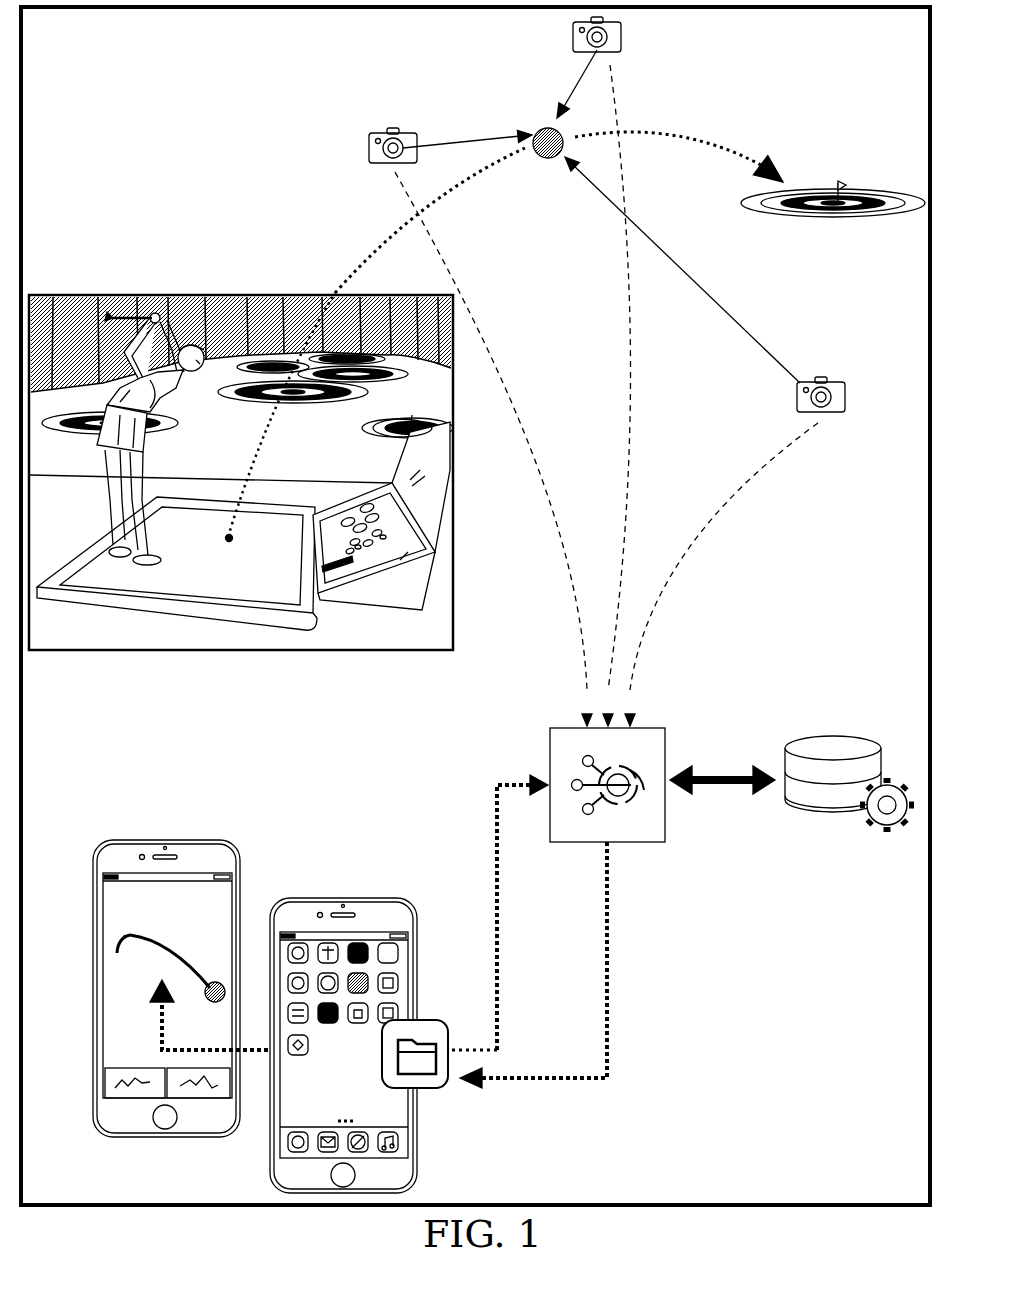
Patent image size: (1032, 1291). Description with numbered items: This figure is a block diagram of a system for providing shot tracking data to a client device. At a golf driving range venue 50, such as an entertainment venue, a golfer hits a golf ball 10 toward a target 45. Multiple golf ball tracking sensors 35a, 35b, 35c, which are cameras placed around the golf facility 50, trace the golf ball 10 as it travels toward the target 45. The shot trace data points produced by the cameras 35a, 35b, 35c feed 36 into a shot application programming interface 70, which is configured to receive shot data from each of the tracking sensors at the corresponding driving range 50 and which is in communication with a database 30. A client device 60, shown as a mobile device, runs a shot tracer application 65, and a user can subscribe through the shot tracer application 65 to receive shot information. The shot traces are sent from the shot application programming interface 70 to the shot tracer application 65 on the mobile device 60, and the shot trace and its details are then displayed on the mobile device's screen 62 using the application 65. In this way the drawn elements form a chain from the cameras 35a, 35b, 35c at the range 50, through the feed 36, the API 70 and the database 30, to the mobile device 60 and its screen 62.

The golf ball 10 is at (540, 125).
The database 30 is at (832, 734).
The golf ball tracking sensor 35a is at (380, 131).
The golf ball tracking sensor 35b is at (624, 32).
The golf ball tracking sensor 35c is at (840, 380).
The feed 36 is at (645, 669).
The target 45 is at (855, 190).
The golf driving range venue 50 is at (258, 292).
The client device 60 is at (337, 898).
The mobile device screen 62 is at (251, 891).
The shot tracer application 65 is at (442, 1021).
The shot application programming interface 70 is at (661, 730).